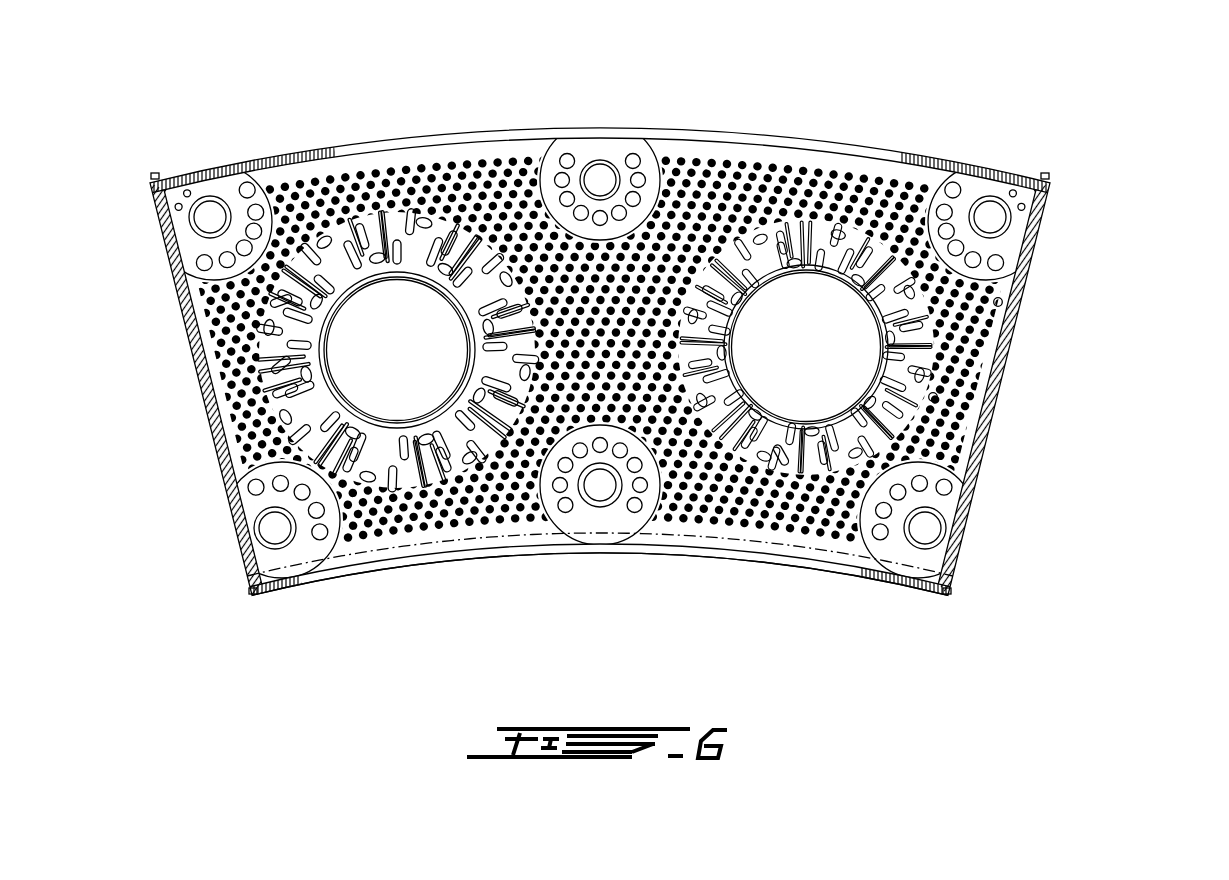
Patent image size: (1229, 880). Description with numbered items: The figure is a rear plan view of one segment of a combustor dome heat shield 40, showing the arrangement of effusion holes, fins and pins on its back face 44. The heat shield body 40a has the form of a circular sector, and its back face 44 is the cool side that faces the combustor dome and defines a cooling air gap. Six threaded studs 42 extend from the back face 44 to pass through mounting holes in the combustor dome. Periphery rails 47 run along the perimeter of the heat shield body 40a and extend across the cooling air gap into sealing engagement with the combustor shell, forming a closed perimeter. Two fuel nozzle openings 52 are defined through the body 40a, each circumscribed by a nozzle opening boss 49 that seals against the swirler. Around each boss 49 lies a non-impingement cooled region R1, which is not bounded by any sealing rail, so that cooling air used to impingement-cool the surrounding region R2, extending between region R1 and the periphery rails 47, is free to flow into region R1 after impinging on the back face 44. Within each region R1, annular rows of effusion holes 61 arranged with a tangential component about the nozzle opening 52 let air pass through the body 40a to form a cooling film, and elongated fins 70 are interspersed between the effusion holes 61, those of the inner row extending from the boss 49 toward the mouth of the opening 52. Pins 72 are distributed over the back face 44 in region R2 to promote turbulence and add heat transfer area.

The dome heat shield 40 is at (1085, 160).
The heat shield body 40a is at (398, 540).
The threaded studs 42 is at (600, 182).
The back face 44 is at (672, 535).
The periphery rails 47 is at (368, 132).
The nozzle opening boss 49 is at (367, 276).
The fuel nozzle opening 52 is at (407, 361).
The effusion holes 61 is at (782, 243).
The fins 70 is at (280, 365).
The pins 72 is at (978, 375).
The non-impingement cooled region R1 is at (933, 397).
The impingement cooled region R2 is at (998, 302).